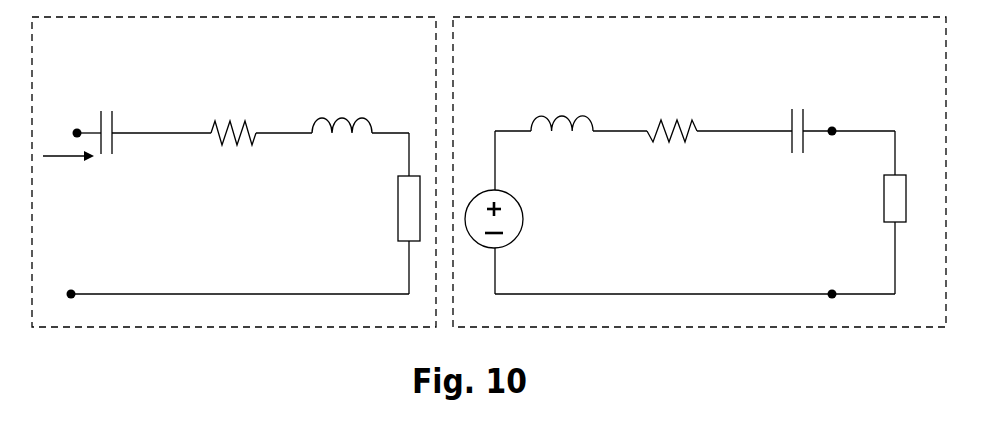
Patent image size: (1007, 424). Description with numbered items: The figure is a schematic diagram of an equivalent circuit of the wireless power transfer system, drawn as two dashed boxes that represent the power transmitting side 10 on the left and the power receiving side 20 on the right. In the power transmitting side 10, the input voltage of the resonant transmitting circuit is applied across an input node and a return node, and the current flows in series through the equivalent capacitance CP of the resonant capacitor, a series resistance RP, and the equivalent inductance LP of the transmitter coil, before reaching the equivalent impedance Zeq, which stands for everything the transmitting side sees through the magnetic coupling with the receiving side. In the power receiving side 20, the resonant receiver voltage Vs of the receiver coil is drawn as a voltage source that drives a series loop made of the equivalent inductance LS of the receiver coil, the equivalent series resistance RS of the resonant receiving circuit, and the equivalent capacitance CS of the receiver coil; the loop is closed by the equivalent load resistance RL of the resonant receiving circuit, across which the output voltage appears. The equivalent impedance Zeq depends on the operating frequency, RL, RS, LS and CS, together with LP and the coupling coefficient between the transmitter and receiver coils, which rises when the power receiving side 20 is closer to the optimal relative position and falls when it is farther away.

The power transmitting side 10 is at (93, 58).
The power receiving side 20 is at (914, 63).
The equivalent capacitance of the resonant capacitor CP is at (108, 116).
The primary resistor RP is at (228, 112).
The equivalent inductance of the transmitter coil LP is at (342, 106).
The equivalent impedance Zeq is at (380, 208).
The resonant receiver voltage Vs is at (514, 219).
The equivalent inductance of the receiver coil LS is at (562, 104).
The equivalent series resistance of the resonant receiving circuit RS is at (672, 110).
The equivalent capacitance of the receiver coil CS is at (802, 115).
The load resistance RL is at (913, 198).